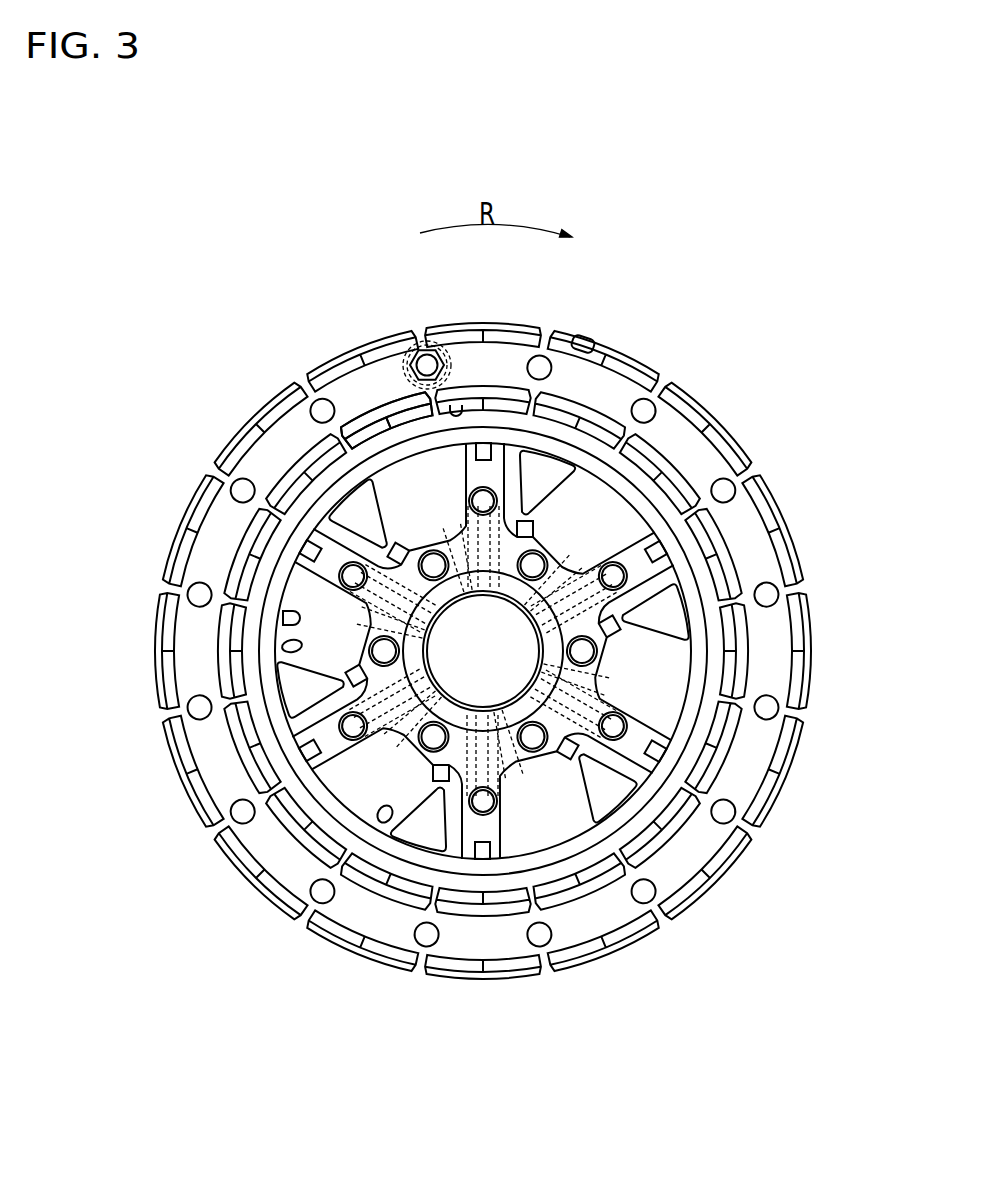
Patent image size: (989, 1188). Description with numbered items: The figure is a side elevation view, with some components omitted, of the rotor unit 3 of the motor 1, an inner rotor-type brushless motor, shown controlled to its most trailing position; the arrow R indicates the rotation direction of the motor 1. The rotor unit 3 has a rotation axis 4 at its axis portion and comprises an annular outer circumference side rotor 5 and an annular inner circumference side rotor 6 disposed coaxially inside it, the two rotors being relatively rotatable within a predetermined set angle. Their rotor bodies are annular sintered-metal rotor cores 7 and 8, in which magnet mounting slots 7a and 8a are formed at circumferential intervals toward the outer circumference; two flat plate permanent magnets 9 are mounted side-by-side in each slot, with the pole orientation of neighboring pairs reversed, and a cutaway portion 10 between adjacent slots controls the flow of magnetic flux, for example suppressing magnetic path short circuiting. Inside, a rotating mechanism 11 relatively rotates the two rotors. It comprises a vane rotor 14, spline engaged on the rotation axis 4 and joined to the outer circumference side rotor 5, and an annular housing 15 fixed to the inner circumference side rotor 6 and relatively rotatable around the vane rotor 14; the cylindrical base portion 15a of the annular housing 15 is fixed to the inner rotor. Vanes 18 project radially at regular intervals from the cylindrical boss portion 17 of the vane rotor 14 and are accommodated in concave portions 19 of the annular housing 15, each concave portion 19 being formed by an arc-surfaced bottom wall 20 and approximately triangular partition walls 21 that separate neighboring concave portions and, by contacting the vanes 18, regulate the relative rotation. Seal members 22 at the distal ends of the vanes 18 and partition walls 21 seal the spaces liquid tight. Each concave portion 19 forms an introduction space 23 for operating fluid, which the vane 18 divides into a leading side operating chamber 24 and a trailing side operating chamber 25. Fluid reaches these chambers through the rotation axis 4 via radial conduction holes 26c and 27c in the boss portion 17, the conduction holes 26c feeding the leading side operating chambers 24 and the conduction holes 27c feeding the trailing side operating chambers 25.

The motor 1 is at (766, 310).
The rotor unit 3 is at (792, 350).
The rotation axis 4 is at (583, 777).
The outer circumference side rotor 5 is at (714, 410).
The inner circumference side rotor 6 is at (686, 477).
The rotor core 7 is at (770, 555).
The magnet mounting slot 7a is at (586, 342).
The rotor core 8 is at (722, 630).
The magnet mounting slot 8a is at (455, 400).
The permanent magnet 9 is at (622, 357).
The cutaway portion 10 is at (367, 403).
The rotating mechanism 11 is at (290, 549).
The vane rotor 14 is at (407, 743).
The annular housing 15 is at (413, 857).
The base portion 15a is at (652, 738).
The boss portion 17 is at (510, 687).
The vane 18 is at (337, 740).
The concave portion 19 is at (387, 810).
The bottom wall 20 is at (295, 622).
The partition wall 21 is at (256, 740).
The seal member 22 is at (570, 752).
The introduction space 23 is at (430, 660).
The leading side operating chamber 24 is at (283, 571).
The trailing side operating chamber 25 is at (372, 626).
The conduction hole 26c is at (430, 598).
The conduction hole 27c is at (432, 646).